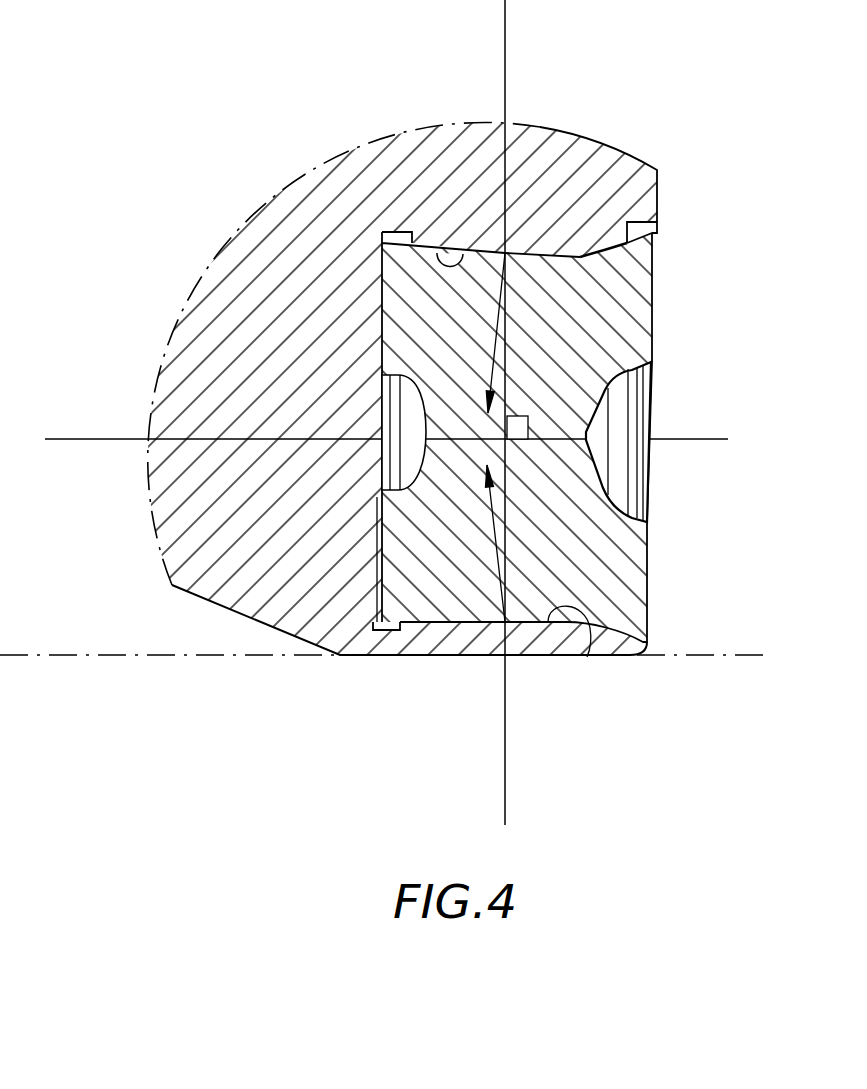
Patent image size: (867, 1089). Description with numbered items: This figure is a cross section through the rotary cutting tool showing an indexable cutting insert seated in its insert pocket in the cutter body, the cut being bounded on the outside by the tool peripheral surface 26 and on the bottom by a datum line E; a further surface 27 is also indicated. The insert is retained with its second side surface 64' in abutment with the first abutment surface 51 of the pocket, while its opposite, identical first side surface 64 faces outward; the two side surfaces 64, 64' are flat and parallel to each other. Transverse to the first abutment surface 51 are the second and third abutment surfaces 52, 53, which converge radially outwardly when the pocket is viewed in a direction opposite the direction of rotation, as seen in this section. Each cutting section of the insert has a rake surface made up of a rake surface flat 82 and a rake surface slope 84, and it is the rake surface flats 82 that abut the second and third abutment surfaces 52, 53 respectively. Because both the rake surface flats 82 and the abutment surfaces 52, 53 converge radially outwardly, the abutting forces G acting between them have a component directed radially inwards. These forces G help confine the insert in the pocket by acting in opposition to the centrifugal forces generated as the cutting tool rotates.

The tool peripheral surface 26 is at (660, 197).
The bottom surface 27 is at (517, 657).
The first abutment surface 51 is at (427, 587).
The second abutment surface 52 is at (437, 255).
The third abutment surface 53 is at (587, 657).
The first side surface 64 is at (659, 388).
The second side surface 64' is at (283, 346).
The rake surface flat 82 is at (510, 253).
The rake surface slope 84 is at (580, 257).
The reference plane E is at (65, 657).
The abutting forces G is at (477, 438).